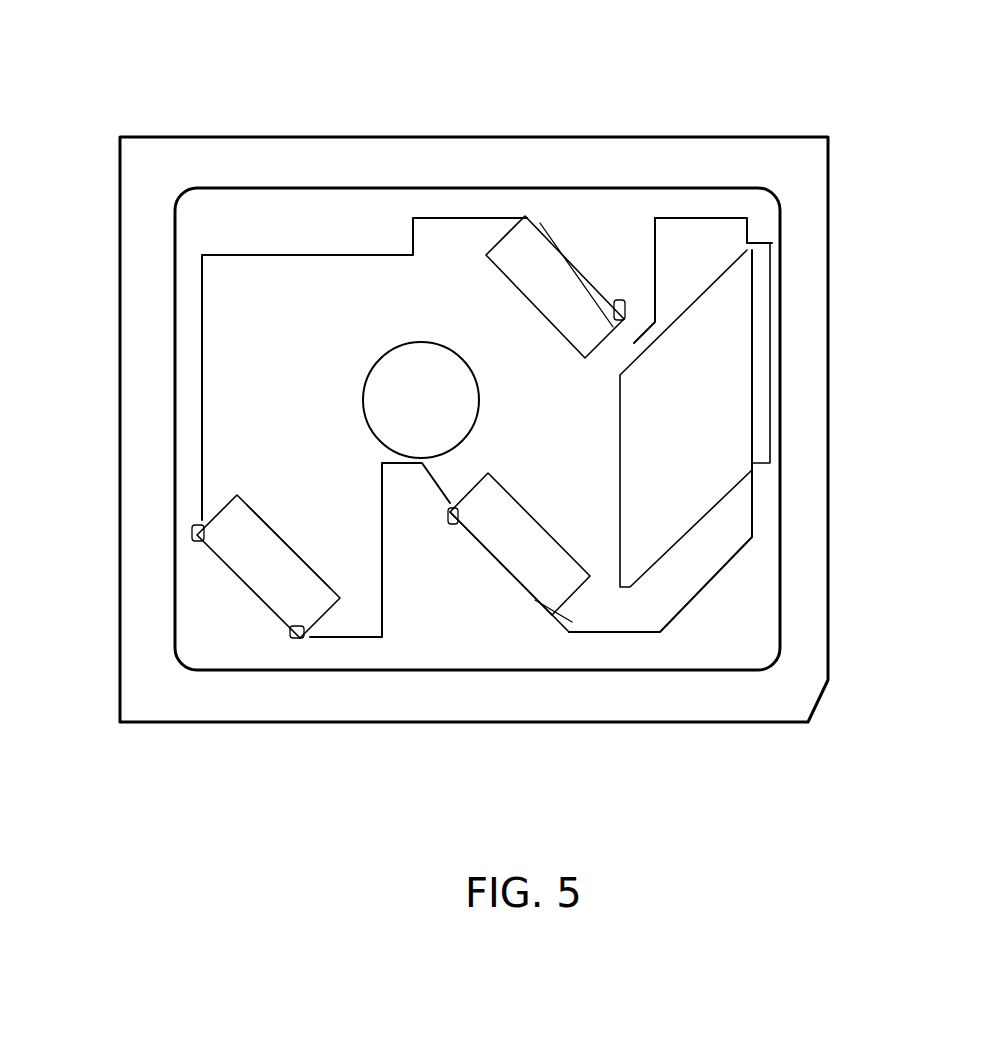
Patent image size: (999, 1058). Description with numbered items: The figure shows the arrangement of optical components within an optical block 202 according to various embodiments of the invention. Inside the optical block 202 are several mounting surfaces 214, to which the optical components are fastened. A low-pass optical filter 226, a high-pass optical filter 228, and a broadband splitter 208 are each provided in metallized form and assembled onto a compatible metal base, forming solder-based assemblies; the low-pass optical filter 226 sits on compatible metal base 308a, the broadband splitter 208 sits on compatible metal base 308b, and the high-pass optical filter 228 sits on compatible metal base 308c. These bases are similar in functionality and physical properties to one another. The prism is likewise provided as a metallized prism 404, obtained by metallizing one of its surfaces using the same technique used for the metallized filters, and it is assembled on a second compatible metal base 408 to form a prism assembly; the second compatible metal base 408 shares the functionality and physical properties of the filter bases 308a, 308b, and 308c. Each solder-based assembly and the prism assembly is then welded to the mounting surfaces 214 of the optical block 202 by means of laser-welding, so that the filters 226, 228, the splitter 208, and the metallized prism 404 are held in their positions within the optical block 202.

The optical block 202 is at (138, 450).
The mounting surfaces 214 is at (628, 272).
The high-pass optical filter 228 is at (520, 255).
The compatible metal base 308c is at (575, 273).
The second compatible metal base 408 is at (757, 287).
The metallized prism 404 is at (735, 393).
The compatible metal base 308a is at (263, 593).
The low-pass optical filter 226 is at (313, 603).
The compatible metal base 308b is at (508, 567).
The broadband splitter 208 is at (563, 587).